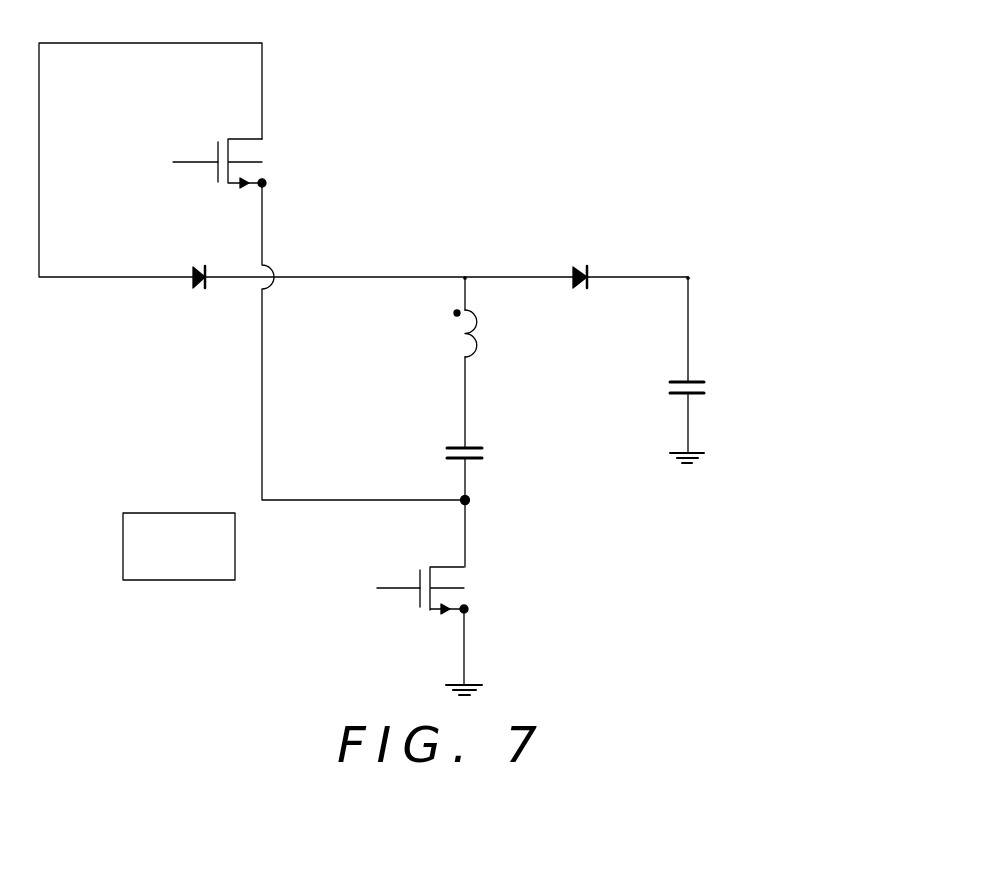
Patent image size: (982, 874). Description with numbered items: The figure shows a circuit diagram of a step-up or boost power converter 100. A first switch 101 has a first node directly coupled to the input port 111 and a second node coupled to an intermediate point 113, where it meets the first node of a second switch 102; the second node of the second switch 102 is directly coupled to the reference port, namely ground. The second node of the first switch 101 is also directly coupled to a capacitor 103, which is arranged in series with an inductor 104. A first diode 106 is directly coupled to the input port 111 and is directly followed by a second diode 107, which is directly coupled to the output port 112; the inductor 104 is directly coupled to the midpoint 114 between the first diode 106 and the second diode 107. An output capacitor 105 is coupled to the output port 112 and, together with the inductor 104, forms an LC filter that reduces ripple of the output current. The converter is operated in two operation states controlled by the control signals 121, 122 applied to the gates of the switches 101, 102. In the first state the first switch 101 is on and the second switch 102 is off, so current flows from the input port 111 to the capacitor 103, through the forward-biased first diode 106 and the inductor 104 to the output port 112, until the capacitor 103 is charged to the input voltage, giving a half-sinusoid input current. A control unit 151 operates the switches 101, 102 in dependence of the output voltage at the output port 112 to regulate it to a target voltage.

The power converter 100 is at (483, 117).
The first switch 101 is at (253, 150).
The second switch 102 is at (457, 577).
The capacitor 103 is at (458, 440).
The inductor 104 is at (460, 333).
The output capacitor 105 is at (692, 377).
The first diode 106 is at (210, 282).
The second diode 107 is at (588, 283).
The input port 111 is at (157, 43).
The output port 112 is at (675, 277).
The intermediate point 113 is at (469, 500).
The midpoint 114 is at (463, 275).
The control signal 121 is at (188, 163).
The control signal 122 is at (392, 590).
The control unit 151 is at (178, 513).